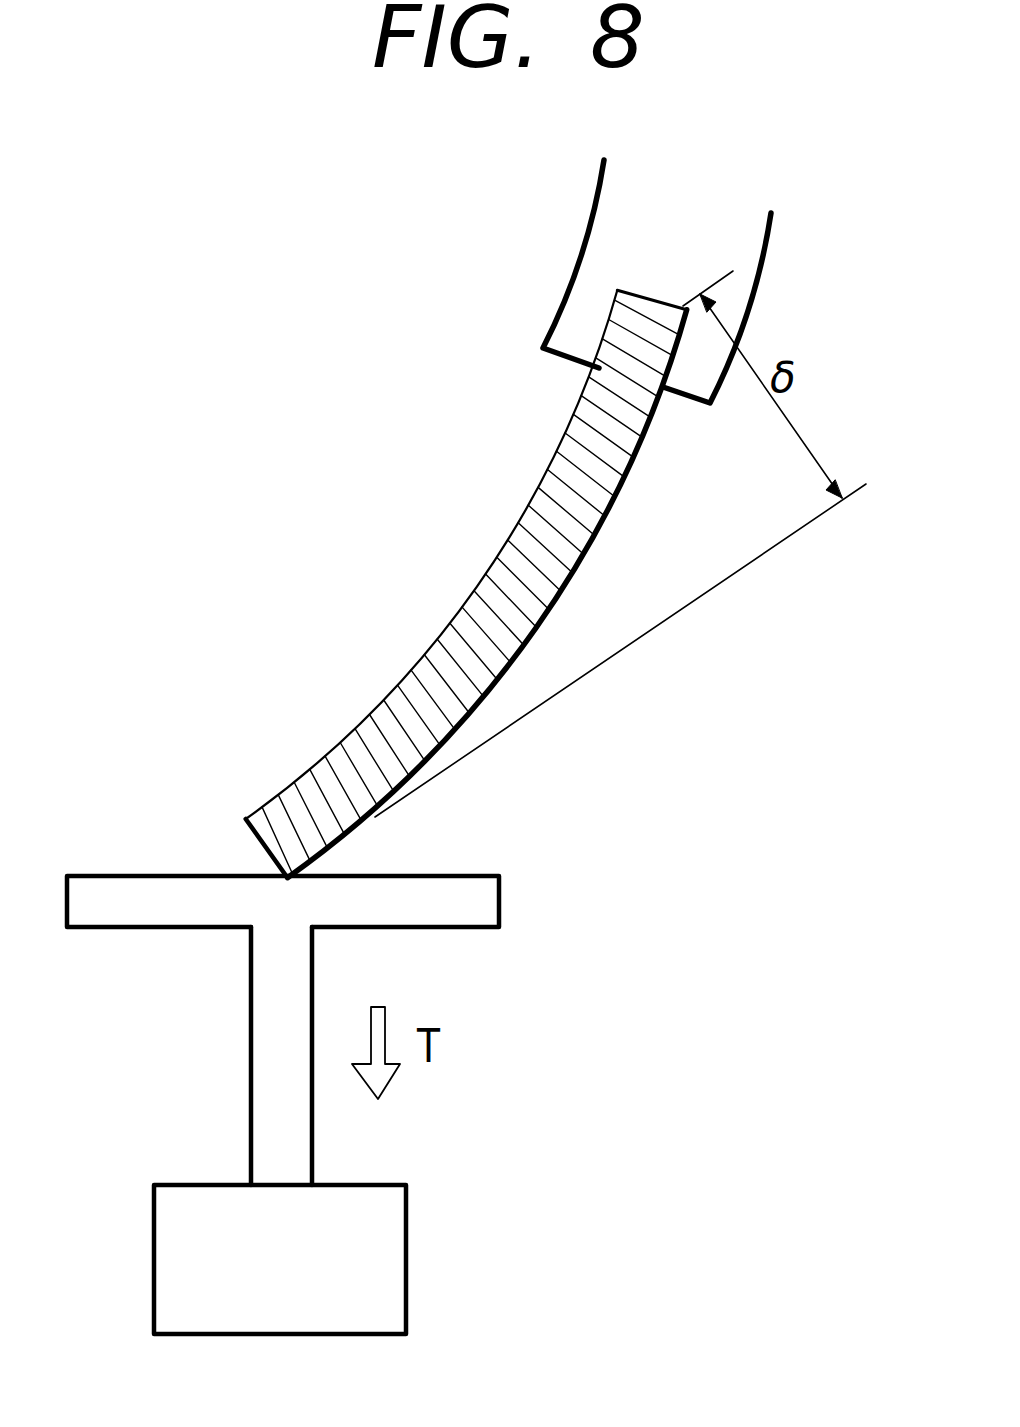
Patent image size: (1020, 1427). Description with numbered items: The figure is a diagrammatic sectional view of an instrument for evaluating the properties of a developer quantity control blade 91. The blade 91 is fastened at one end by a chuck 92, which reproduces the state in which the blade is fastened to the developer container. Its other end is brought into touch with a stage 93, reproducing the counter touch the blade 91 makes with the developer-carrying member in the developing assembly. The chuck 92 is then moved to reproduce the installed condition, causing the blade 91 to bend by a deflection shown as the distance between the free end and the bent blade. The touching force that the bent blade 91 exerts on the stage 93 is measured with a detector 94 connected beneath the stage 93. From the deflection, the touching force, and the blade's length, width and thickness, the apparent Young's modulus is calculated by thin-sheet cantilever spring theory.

The developer quantity control blade 91 is at (430, 685).
The chuck 92 is at (607, 248).
The stage 93 is at (481, 901).
The detector 94 is at (385, 1247).